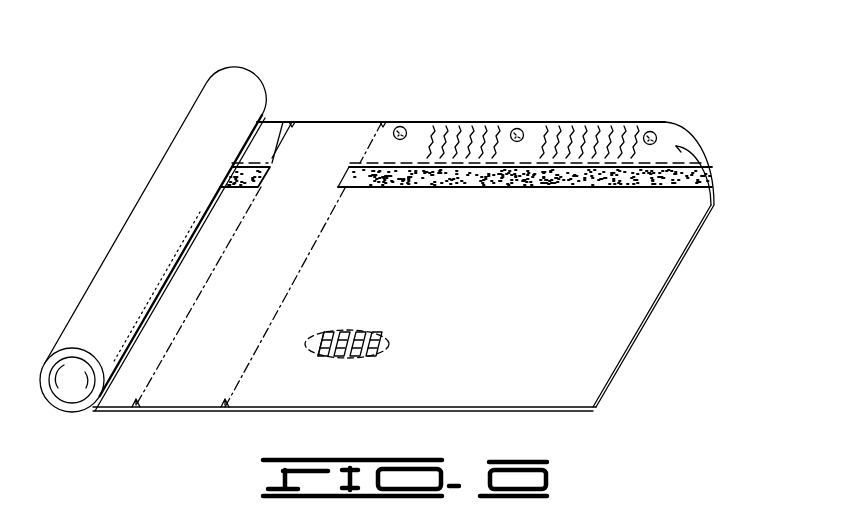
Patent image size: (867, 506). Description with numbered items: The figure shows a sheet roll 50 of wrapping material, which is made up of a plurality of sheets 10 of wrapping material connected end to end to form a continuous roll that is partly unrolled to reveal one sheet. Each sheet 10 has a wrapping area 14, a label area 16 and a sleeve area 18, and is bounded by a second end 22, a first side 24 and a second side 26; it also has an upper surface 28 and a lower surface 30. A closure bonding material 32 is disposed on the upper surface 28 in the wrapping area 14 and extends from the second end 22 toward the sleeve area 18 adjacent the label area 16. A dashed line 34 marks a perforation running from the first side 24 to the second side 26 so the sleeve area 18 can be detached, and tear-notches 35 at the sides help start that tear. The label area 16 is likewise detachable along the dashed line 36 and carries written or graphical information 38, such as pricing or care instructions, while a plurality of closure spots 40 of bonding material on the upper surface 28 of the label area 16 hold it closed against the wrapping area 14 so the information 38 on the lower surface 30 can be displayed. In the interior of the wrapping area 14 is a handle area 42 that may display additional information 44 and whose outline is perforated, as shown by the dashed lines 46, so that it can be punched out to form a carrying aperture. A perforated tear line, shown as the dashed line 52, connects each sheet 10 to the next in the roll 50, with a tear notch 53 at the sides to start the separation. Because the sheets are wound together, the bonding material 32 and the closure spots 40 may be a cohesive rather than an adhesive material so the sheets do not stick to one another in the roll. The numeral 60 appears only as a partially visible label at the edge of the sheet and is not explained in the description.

The sheet of material 10 is at (290, 122).
The wrapping area 14 is at (645, 257).
The label area 16 is at (283, 110).
The sleeve area 18 is at (311, 160).
The second end 22 is at (672, 280).
The first side 24 is at (418, 409).
The second side 26 is at (601, 150).
The upper surface 28 is at (602, 340).
The lower surface 30 is at (681, 148).
The closure bonding material 32 is at (254, 180).
The dashed line 34 is at (288, 297).
The tear-notches 35 is at (383, 122).
The dashed line 36 is at (250, 162).
The information 38 is at (462, 155).
The closure spots 40 is at (400, 126).
The handle area 42 is at (315, 338).
The additional information 44 is at (334, 358).
The dashed lines 46 is at (381, 338).
The sheet roll 50 is at (157, 120).
The dashed line 52 is at (228, 244).
The tear notch 53 is at (294, 122).
The element of adjacent figure 60 is at (650, 504).